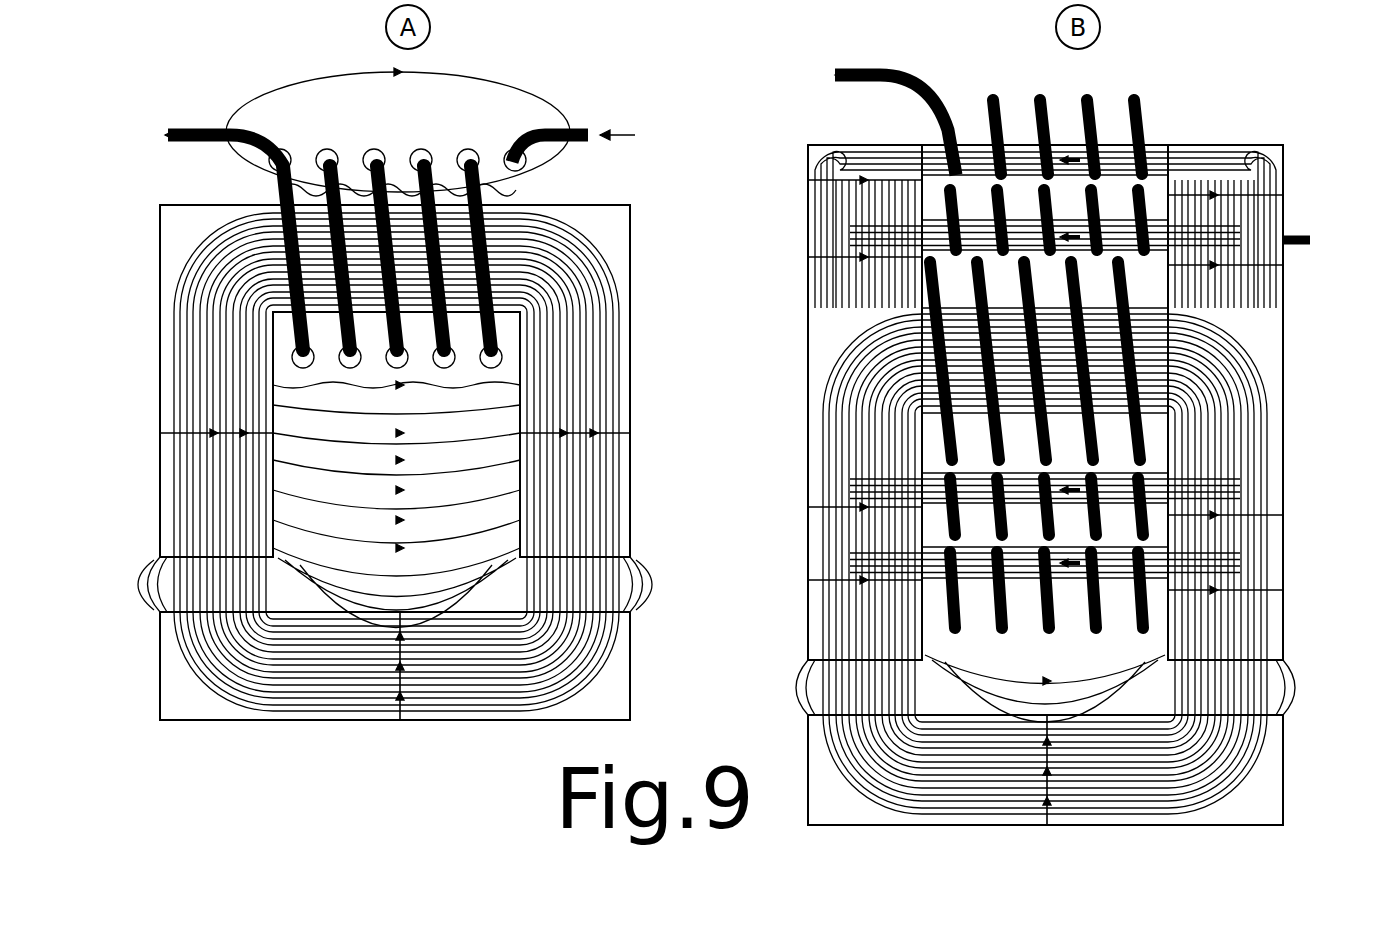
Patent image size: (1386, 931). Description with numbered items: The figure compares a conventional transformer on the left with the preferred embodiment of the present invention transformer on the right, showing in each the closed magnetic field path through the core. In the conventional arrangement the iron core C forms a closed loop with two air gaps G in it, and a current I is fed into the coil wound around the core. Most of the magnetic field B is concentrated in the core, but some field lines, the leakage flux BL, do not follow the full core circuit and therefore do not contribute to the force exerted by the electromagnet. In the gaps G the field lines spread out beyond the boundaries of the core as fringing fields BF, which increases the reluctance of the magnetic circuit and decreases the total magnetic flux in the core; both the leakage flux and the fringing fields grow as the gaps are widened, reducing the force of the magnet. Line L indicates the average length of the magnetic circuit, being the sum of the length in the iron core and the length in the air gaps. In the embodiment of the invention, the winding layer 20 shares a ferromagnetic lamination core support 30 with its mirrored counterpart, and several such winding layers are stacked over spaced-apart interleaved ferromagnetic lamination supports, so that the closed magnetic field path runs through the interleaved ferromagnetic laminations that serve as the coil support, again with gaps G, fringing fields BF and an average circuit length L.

The ferromagnetic lamination core support 30 is at (1283, 400).
The winding layer 20 is at (1137, 621).
The iron core C is at (408, 480).
The average length of the magnetic circuit L is at (358, 434).
The magnetic field B is at (240, 414).
The air gap G is at (396, 593).
The fringing fields BF is at (390, 584).
The leakage flux BL is at (478, 160).
The current I is at (1355, 240).